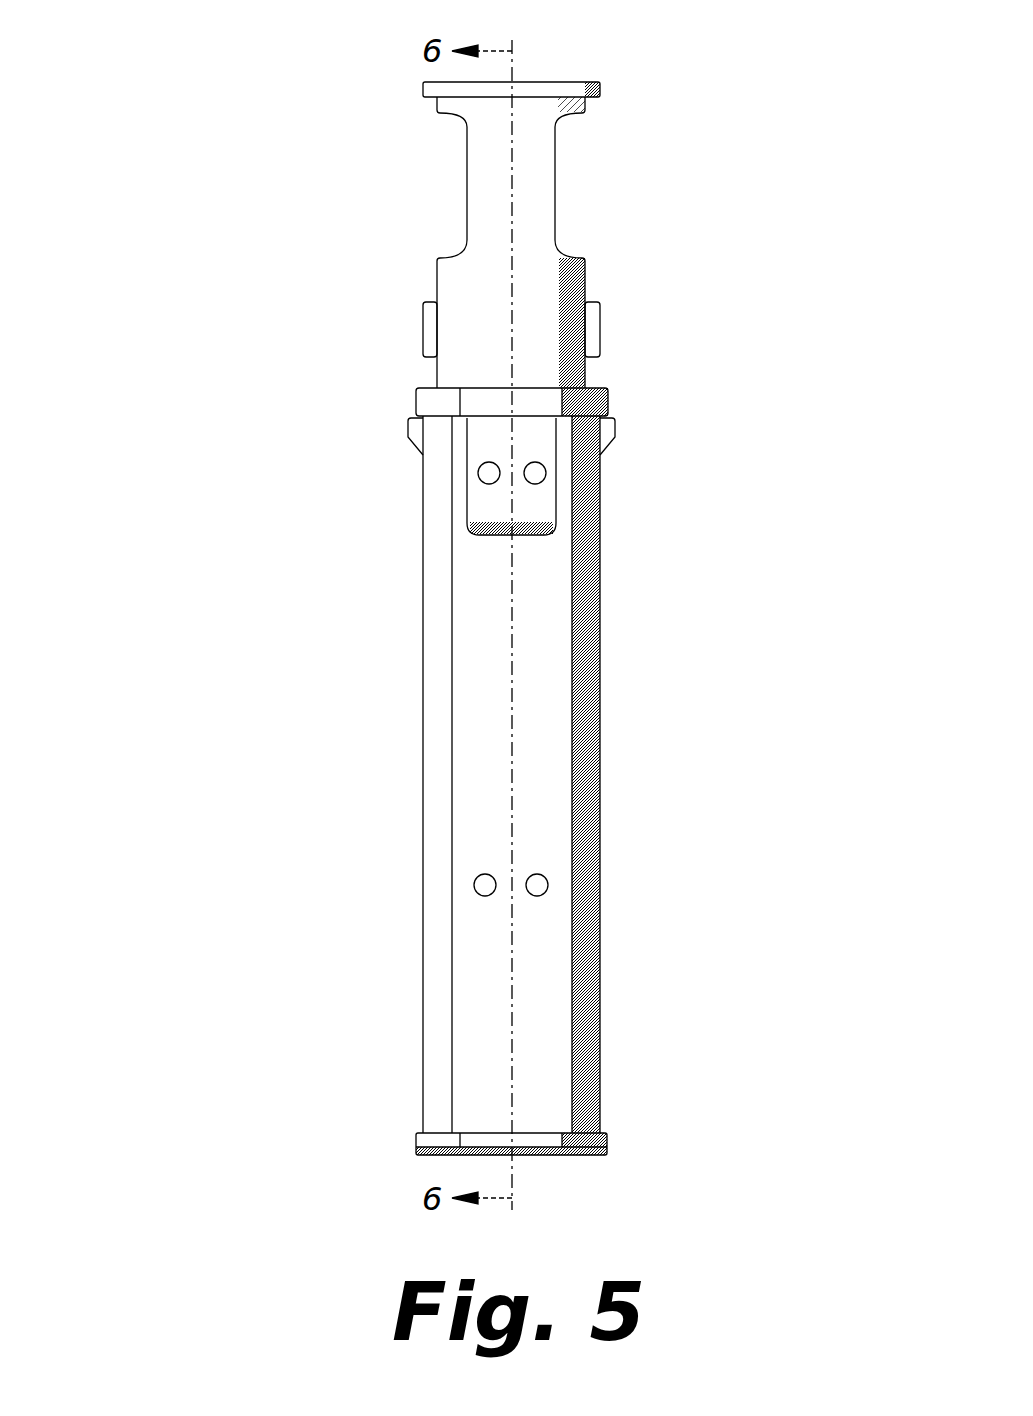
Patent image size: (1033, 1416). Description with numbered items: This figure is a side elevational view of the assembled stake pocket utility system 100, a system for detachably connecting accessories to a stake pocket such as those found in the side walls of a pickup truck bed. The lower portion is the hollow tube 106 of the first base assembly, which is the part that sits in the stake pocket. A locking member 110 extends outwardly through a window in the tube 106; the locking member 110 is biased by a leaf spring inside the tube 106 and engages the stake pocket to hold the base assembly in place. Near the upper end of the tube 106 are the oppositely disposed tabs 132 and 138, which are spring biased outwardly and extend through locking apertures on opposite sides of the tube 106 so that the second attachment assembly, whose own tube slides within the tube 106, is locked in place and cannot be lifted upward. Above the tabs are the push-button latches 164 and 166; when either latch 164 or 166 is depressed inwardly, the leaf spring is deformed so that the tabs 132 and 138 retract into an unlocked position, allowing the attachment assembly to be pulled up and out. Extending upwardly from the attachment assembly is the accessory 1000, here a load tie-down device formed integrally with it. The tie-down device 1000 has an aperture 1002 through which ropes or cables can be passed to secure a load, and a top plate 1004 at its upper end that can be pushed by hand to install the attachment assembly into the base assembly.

The stake pocket utility system 100 is at (453, 579).
The hollow tube 106 is at (507, 771).
The locking member 110 is at (485, 505).
The tab 132 is at (408, 430).
The tab 138 is at (615, 430).
The latch 164 is at (423, 325).
The latch 166 is at (600, 325).
The accessory 1000 is at (505, 196).
The aperture 1002 is at (555, 170).
The top plate 1004 is at (425, 82).